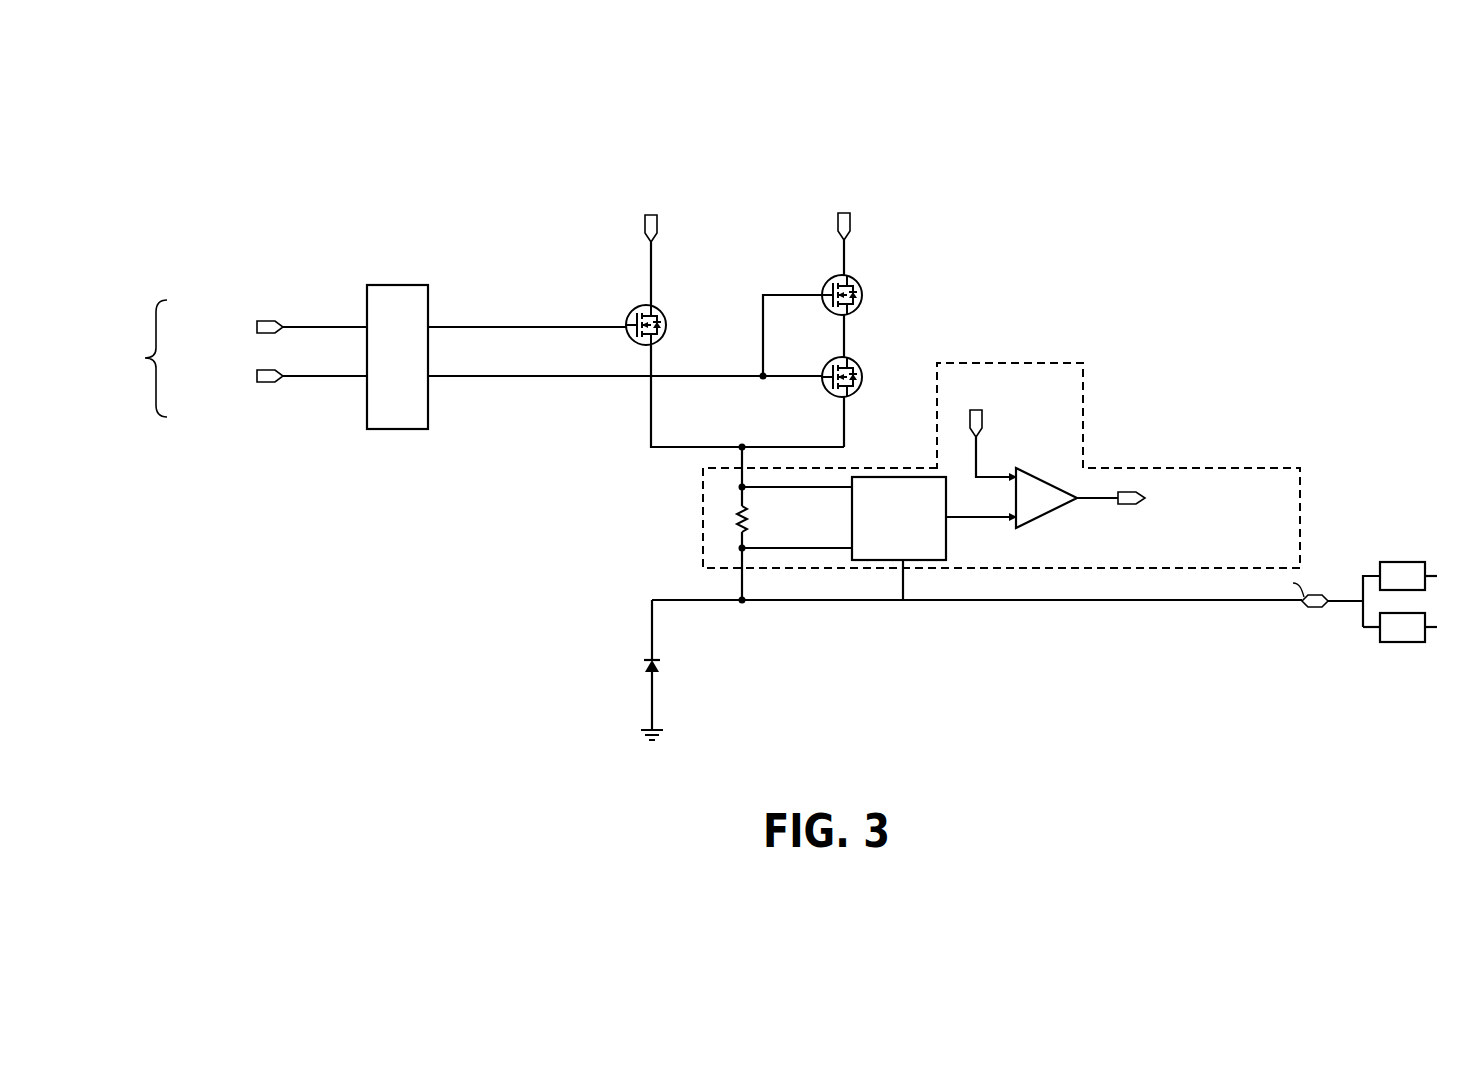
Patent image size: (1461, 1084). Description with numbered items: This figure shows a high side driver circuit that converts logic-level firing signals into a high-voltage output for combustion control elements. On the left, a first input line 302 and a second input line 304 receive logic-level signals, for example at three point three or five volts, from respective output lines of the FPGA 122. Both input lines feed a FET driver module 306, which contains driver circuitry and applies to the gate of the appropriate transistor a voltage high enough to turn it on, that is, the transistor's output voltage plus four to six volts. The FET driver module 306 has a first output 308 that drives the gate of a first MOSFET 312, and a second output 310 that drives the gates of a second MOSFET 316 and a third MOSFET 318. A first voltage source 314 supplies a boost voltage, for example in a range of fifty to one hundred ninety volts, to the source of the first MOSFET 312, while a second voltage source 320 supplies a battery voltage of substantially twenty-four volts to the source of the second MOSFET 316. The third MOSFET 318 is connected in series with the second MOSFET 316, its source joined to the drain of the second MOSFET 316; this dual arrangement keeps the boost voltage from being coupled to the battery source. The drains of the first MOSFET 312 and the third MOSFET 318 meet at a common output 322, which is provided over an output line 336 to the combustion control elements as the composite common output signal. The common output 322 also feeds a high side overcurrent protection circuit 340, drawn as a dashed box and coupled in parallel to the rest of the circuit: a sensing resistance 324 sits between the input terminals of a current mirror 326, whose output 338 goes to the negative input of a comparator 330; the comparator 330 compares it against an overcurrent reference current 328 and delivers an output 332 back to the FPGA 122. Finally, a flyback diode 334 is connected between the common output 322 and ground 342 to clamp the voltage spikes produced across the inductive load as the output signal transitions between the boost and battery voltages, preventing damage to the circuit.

The FPGA 122 is at (124, 358).
The first input line 302 is at (330, 327).
The second input line 304 is at (318, 378).
The FET driver module 306 is at (400, 285).
The first output 308 is at (450, 321).
The second output 310 is at (450, 370).
The first MOSFET 312 is at (632, 310).
The first voltage source 314 is at (658, 228).
The second MOSFET 316 is at (827, 278).
The third MOSFET 318 is at (827, 358).
The second voltage source 320 is at (852, 228).
The common output 322 is at (745, 463).
The sensing resistance 324 is at (737, 517).
The current mirror 326 is at (902, 563).
The overcurrent reference current 328 is at (978, 422).
The comparator 330 is at (1022, 470).
The output 332 is at (1128, 493).
The flyback diode 334 is at (645, 670).
The output line 336 is at (1042, 602).
The output 338 is at (970, 522).
The high side overcurrent protection circuit 340 is at (1246, 468).
The ground 342 is at (643, 738).